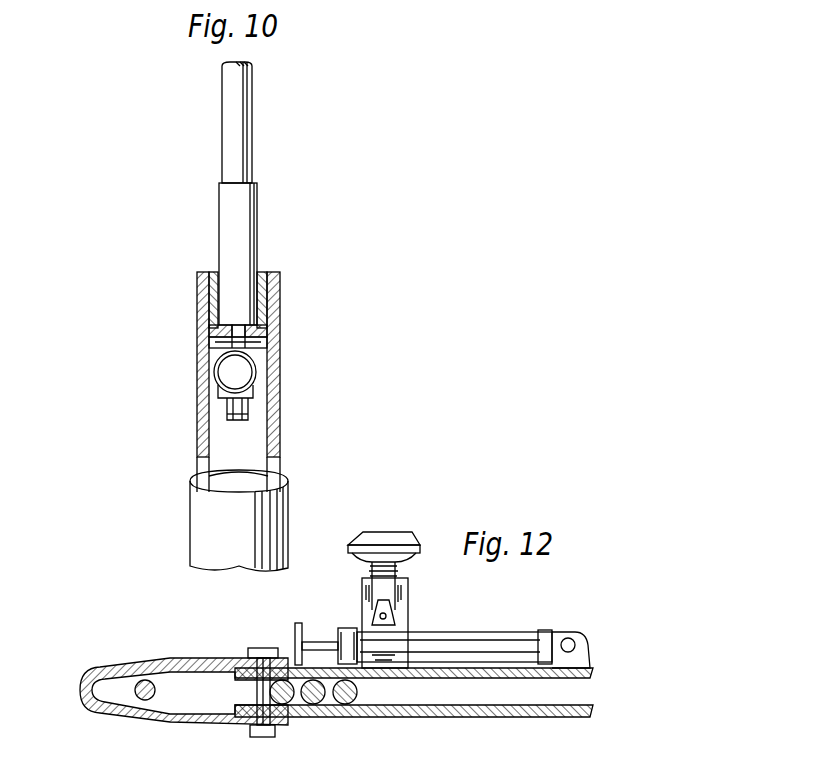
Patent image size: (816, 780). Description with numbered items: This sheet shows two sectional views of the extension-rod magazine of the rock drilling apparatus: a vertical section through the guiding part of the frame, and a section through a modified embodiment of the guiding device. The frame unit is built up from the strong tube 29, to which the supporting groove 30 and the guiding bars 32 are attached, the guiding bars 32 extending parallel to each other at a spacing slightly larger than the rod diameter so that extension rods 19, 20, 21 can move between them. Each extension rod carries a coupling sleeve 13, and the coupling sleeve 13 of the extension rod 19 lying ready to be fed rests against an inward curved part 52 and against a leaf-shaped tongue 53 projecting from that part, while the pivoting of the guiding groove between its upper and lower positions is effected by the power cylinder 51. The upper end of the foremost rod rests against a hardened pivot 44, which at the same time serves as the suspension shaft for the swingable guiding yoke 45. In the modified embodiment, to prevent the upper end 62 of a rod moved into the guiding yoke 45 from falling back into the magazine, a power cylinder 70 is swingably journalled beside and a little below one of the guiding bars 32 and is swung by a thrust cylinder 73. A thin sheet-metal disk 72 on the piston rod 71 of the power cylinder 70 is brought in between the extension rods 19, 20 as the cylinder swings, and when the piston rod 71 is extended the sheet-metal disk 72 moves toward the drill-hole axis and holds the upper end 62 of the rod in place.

In FIG. 10, the extension rod 21 is at (237, 128).
In FIG. 12, the extension rod 21 is at (355, 706).
In FIG. 10, the coupling sleeve 13 is at (240, 216).
In FIG. 10, the supporting groove 30 is at (262, 273).
In FIG. 10, the leaf-shaped tongue 53 is at (226, 335).
In FIG. 10, the inward curved part 52 is at (266, 340).
In FIG. 10, the power cylinder 51 is at (241, 372).
In FIG. 10, the tube 29 is at (249, 514).
In FIG. 12, the thrust cylinder 73 is at (405, 556).
In FIG. 12, the power cylinder 70 is at (472, 642).
In FIG. 12, the piston rod 71 is at (318, 642).
In FIG. 12, the sheet-metal disk 72 is at (293, 631).
In FIG. 12, the guiding bars 32 is at (452, 678).
In FIG. 12, the guiding yoke 45 is at (80, 684).
In FIG. 12, the upper end 62 is at (142, 701).
In FIG. 12, the pivot 44 is at (256, 690).
In FIG. 12, the extension rod 19 is at (290, 706).
In FIG. 12, the extension rod 20 is at (322, 706).